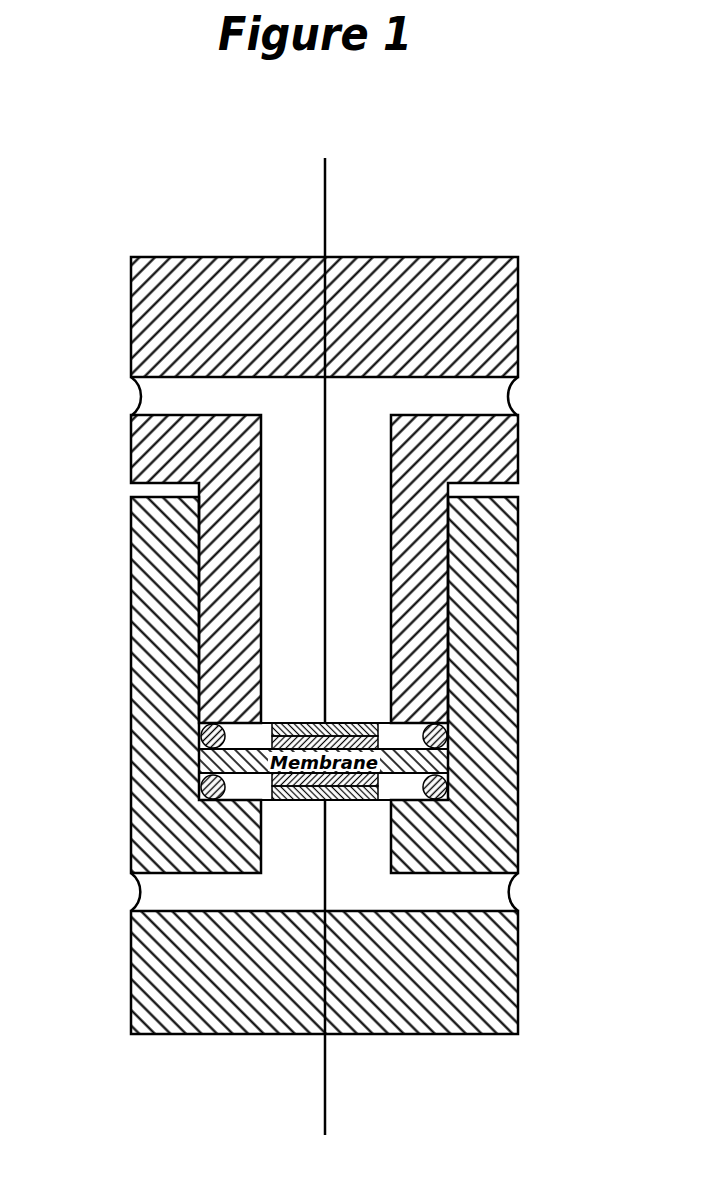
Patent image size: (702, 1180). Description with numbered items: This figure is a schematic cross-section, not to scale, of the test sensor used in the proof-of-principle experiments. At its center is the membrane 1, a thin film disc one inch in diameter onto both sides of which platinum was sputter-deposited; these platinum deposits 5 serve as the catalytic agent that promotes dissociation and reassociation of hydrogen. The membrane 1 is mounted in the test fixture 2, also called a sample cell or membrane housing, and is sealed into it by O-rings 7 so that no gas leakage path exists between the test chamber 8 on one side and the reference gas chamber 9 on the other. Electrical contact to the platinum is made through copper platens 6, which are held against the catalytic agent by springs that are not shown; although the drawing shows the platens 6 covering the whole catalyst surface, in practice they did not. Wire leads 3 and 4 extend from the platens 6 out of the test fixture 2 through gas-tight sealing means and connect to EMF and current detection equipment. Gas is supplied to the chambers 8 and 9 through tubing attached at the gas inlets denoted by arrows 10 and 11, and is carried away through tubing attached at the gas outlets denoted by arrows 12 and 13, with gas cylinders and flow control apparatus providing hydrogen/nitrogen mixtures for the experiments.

The membrane 1 is at (248, 738).
The test fixture 2 is at (323, 647).
The wire lead 3 is at (313, 440).
The wire lead 4 is at (324, 967).
The platinum deposits 5 is at (341, 750).
The copper platens 6 is at (323, 759).
The O-rings 7 is at (320, 763).
The test chamber 8 is at (303, 874).
The reference gas chamber 9 is at (298, 543).
The gas inlet arrow 10 is at (105, 892).
The gas inlet arrow 11 is at (107, 397).
The gas outlet arrow 12 is at (556, 905).
The gas outlet arrow 13 is at (538, 397).